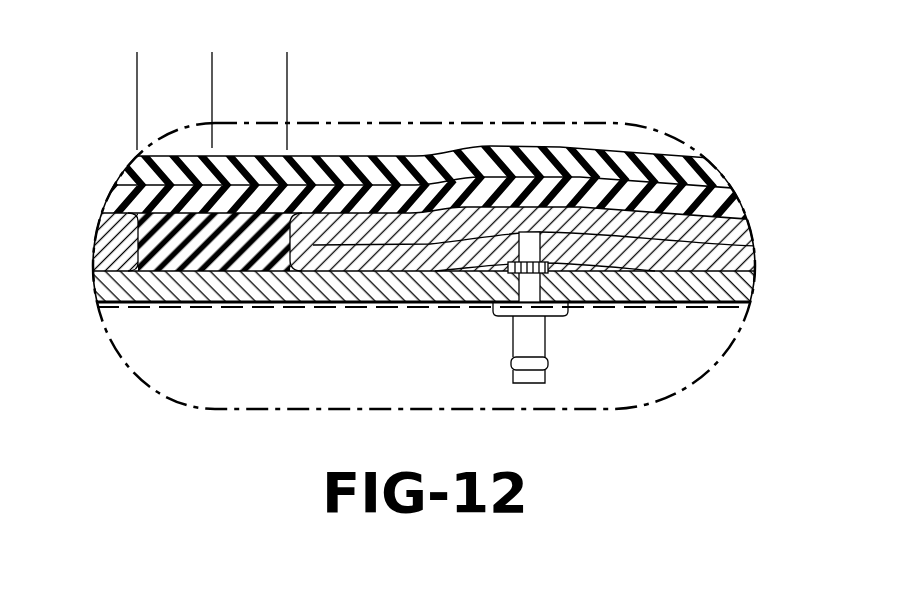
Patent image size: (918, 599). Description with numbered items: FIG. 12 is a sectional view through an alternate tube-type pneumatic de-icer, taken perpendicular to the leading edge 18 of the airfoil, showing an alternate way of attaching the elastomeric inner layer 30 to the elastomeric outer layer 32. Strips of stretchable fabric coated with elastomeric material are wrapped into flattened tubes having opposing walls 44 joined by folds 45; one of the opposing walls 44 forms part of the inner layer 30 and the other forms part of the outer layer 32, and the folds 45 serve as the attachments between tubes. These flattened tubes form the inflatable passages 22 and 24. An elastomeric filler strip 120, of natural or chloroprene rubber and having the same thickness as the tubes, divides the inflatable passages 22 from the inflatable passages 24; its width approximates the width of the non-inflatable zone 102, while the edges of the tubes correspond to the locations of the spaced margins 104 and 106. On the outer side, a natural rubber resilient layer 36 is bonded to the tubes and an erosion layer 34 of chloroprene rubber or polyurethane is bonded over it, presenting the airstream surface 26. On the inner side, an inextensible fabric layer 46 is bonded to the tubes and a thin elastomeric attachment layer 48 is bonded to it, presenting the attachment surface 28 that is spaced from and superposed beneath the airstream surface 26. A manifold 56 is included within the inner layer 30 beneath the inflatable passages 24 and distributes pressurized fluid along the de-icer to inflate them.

The leading edge 18 is at (212, 60).
The inflatable passages 22 is at (116, 270).
The inflatable passages 24 is at (636, 272).
The airstream surface 26 is at (665, 158).
The attachment surface 28 is at (718, 305).
The inner layer 30 is at (770, 247).
The outer layer 32 is at (770, 160).
The erosion layer 34 is at (137, 170).
The resilient layer 36 is at (130, 186).
The opposing walls 44 is at (100, 222).
The folds 45 is at (134, 242).
The inextensible fabric layer 46 is at (100, 290).
The elastomeric attachment layer 48 is at (102, 305).
The manifold 56 is at (496, 284).
The non-inflatable zone 102 is at (228, 162).
The spaced margin 104 is at (287, 60).
The spaced margin 106 is at (137, 88).
The elastomeric filler strip 120 is at (183, 236).